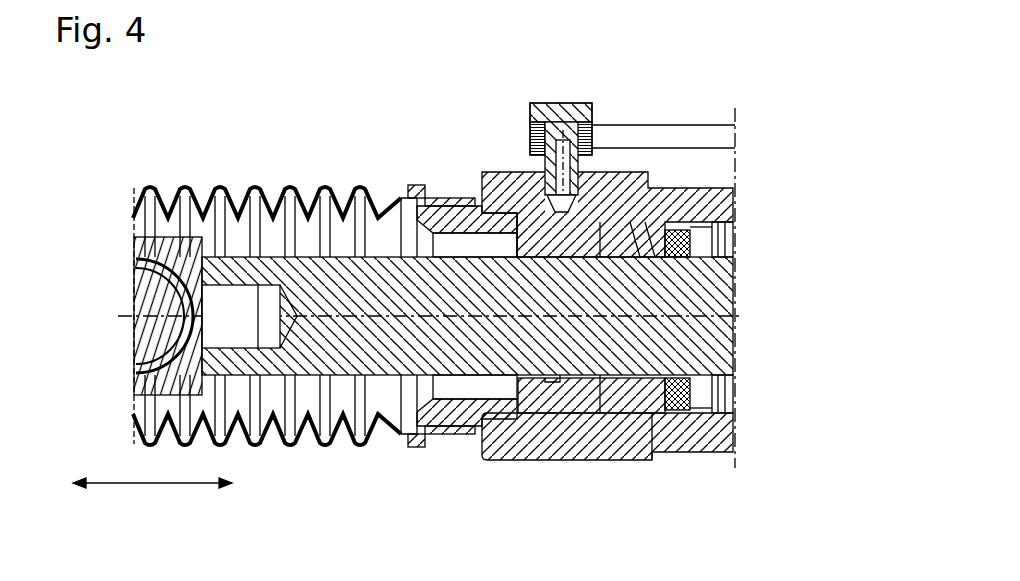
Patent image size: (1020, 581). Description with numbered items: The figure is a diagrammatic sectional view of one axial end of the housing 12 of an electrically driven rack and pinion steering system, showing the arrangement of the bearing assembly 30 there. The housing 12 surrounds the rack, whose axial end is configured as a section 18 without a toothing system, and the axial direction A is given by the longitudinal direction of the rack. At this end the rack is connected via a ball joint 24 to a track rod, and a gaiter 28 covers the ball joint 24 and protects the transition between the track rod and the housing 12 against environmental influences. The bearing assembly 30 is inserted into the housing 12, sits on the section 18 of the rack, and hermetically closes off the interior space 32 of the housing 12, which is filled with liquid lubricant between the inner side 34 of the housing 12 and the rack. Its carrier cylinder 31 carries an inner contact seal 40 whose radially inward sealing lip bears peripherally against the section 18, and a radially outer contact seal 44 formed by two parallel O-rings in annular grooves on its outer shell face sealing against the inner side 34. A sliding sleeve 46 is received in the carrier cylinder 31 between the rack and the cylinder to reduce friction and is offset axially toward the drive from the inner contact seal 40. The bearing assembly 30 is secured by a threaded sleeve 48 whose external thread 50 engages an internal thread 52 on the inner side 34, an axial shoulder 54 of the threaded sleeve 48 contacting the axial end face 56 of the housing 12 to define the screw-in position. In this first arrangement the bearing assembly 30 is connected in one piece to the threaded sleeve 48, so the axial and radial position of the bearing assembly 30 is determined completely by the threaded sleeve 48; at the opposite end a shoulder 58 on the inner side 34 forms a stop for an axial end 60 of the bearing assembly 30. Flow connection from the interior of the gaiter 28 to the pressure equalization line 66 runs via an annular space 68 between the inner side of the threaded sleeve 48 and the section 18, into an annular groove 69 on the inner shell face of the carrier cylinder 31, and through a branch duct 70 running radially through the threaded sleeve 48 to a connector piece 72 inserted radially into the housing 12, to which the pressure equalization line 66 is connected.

The housing 12 is at (649, 292).
The section without a toothing system 18 is at (355, 285).
The ball joint 24 is at (145, 297).
The gaiter 28 is at (182, 192).
The bearing assembly 30 is at (695, 418).
The carrier cylinder 31 is at (663, 400).
The interior space 32 is at (723, 248).
The inner side 34 is at (733, 395).
The inner contact seal 40 is at (690, 233).
The radially outer contact seal 44 is at (648, 185).
The sliding sleeve 46 is at (603, 397).
The threaded sleeve 48 is at (470, 420).
The external thread 50 is at (590, 483).
The internal thread 52 is at (528, 420).
The axial shoulder 54 is at (408, 266).
The axial end face 56 is at (453, 248).
The shoulder 58 is at (735, 410).
The axial end 60 is at (773, 417).
The pressure equalization line 66 is at (717, 133).
The annular space 68 is at (447, 213).
The annular groove 69 is at (560, 398).
The branch duct 70 is at (528, 165).
The connector piece 72 is at (565, 103).
The axial direction A is at (150, 487).